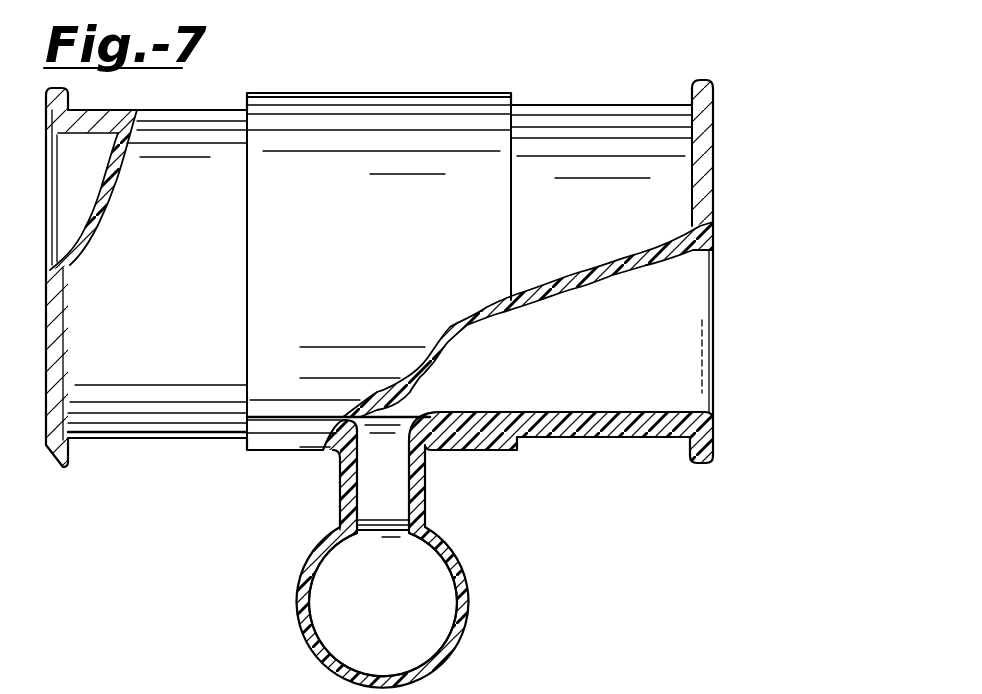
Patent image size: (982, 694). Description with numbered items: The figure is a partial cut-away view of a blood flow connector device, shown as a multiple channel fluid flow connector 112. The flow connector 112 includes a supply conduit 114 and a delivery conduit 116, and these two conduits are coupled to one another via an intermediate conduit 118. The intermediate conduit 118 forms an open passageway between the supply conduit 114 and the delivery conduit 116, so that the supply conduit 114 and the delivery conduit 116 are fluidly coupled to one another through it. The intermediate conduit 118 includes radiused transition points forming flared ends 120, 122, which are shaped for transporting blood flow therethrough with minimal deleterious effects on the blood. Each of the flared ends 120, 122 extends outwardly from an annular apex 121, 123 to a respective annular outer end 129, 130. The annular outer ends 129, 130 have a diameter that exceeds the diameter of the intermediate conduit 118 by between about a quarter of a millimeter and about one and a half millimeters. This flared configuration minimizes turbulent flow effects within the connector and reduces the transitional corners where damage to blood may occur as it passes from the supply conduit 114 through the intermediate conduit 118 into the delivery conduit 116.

The flow connector 112 is at (724, 84).
The supply conduit 114 is at (555, 104).
The delivery conduit 116 is at (472, 585).
The intermediate conduit 118 is at (423, 482).
The flared end 120 is at (417, 420).
The annular apex 121 is at (410, 440).
The flared end 122 is at (348, 545).
The annular apex 123 is at (403, 504).
The annular outer end 129 is at (425, 450).
The annular outer end 130 is at (428, 542).